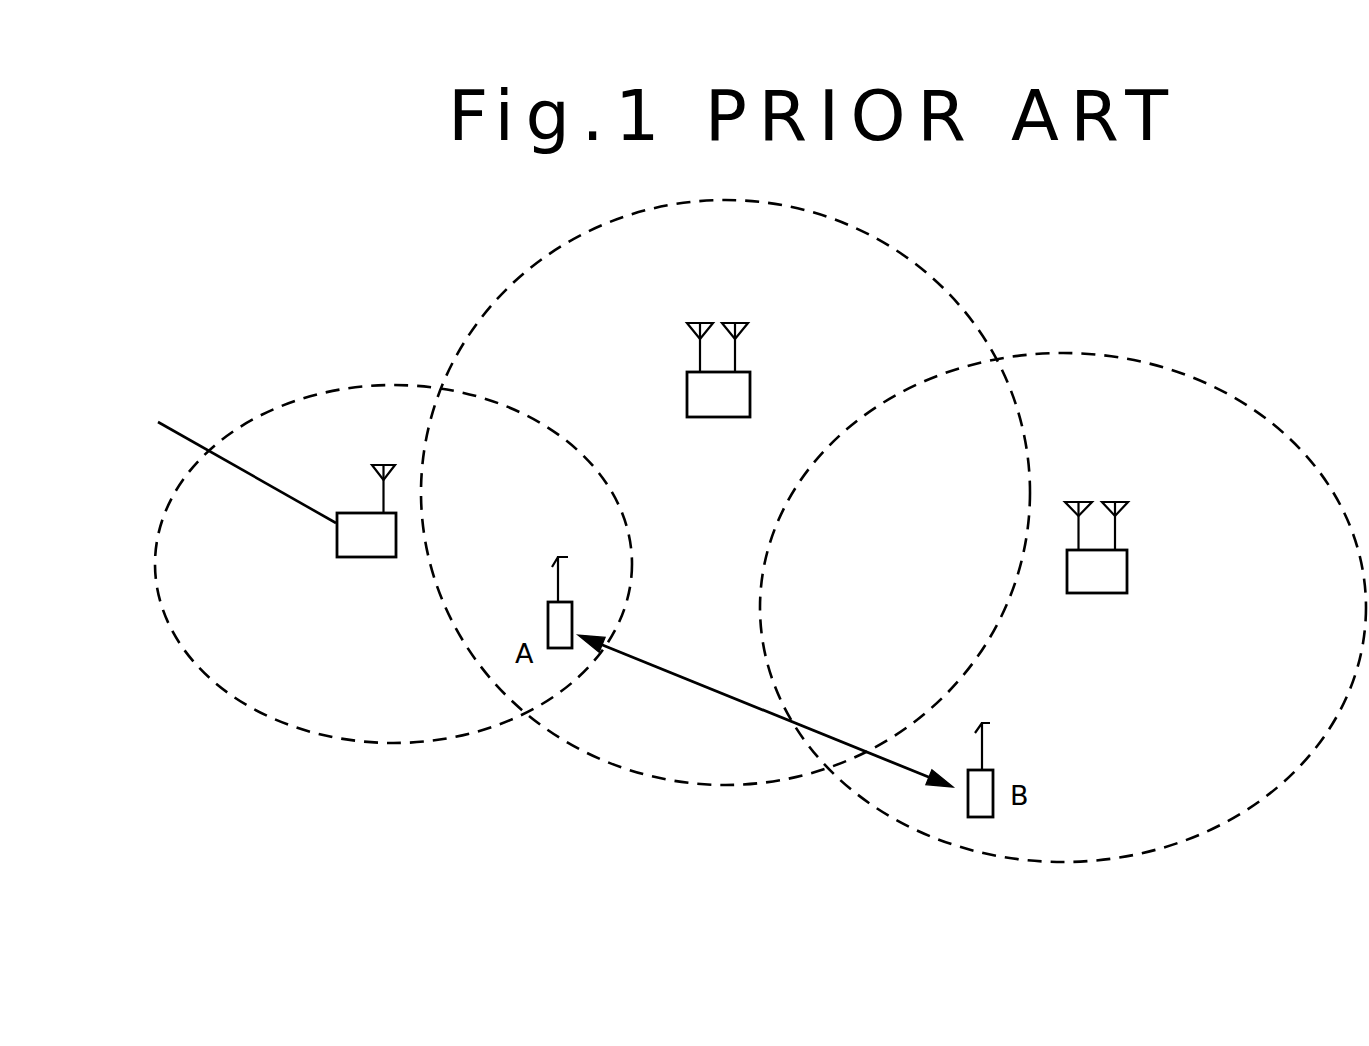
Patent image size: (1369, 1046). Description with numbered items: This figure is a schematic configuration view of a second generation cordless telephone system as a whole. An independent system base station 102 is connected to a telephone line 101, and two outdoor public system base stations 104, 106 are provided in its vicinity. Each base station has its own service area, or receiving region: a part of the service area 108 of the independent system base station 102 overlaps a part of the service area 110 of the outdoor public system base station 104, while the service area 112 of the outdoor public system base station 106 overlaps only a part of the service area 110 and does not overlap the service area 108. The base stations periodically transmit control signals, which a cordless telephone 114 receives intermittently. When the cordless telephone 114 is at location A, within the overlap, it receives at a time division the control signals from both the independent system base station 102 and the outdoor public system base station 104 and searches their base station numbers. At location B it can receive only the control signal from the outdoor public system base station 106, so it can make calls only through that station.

The telephone line 101 is at (188, 440).
The independent system base station 102 is at (370, 557).
The outdoor public system base station 104 is at (722, 417).
The outdoor public system base station 106 is at (1100, 580).
The service area 108 is at (342, 741).
The service area 110 is at (598, 763).
The service area 112 is at (1065, 862).
The cordless telephone 114 is at (550, 623).